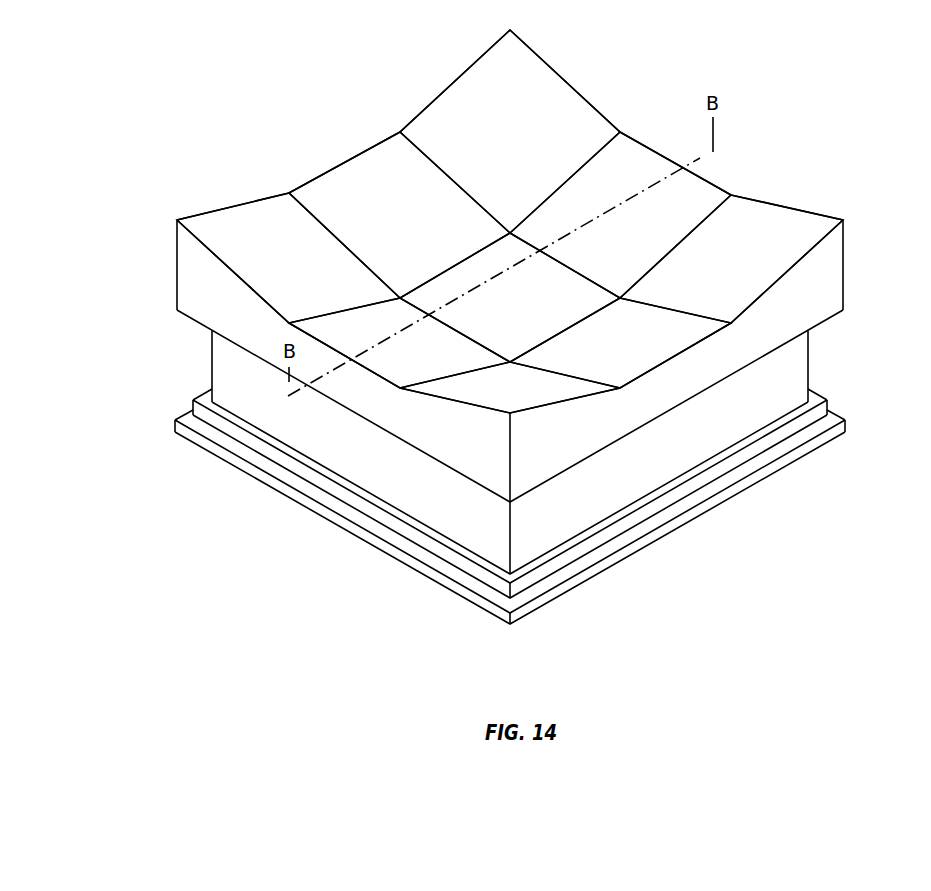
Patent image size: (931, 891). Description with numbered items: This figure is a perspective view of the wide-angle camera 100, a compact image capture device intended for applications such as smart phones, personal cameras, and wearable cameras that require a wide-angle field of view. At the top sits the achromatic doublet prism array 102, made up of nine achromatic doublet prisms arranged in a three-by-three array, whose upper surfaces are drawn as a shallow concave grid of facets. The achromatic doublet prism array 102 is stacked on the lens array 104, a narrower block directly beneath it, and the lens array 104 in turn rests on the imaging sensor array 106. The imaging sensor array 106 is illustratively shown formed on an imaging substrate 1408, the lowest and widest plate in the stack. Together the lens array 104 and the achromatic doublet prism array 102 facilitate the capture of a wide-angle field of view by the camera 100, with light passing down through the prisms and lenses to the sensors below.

The wide-angle camera 100 is at (139, 86).
The achromatic doublet prism array 102 is at (188, 275).
The lens array 104 is at (222, 363).
The imaging sensor array 106 is at (203, 415).
The imaging substrate 1408 is at (203, 442).